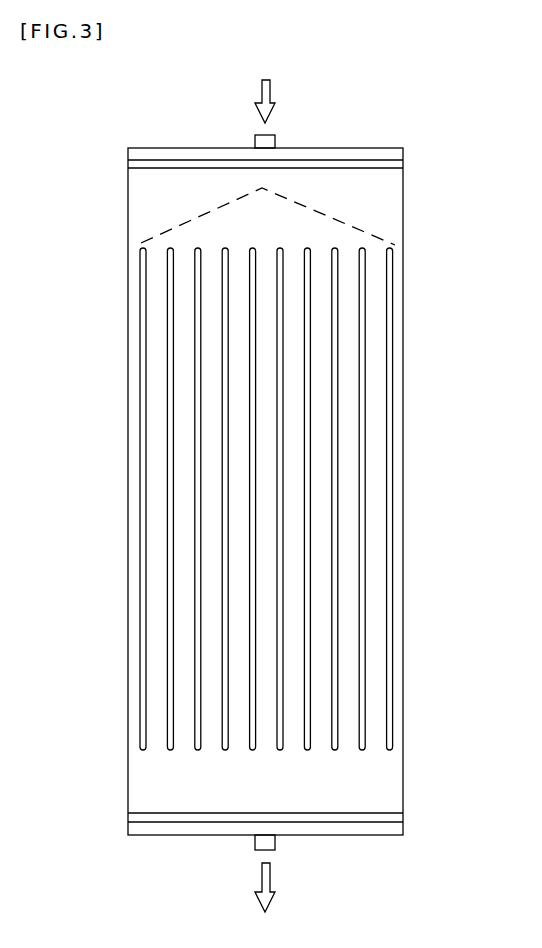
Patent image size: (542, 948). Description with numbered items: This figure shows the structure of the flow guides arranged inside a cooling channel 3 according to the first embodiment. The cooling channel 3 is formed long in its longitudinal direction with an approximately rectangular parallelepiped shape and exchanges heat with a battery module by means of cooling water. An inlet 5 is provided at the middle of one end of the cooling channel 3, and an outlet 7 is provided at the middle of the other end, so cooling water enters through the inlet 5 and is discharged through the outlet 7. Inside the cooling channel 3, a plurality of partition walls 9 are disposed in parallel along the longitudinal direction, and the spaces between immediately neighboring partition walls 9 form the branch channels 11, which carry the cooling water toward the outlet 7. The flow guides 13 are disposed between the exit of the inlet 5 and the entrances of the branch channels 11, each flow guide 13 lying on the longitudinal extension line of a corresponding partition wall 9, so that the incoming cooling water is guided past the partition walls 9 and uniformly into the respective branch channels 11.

The cooling channel 3 is at (451, 241).
The inlet 5 is at (276, 139).
The outlet 7 is at (276, 843).
The partition wall 9 is at (197, 392).
The branch channels 11 is at (428, 247).
The flow guides 13 is at (167, 230).